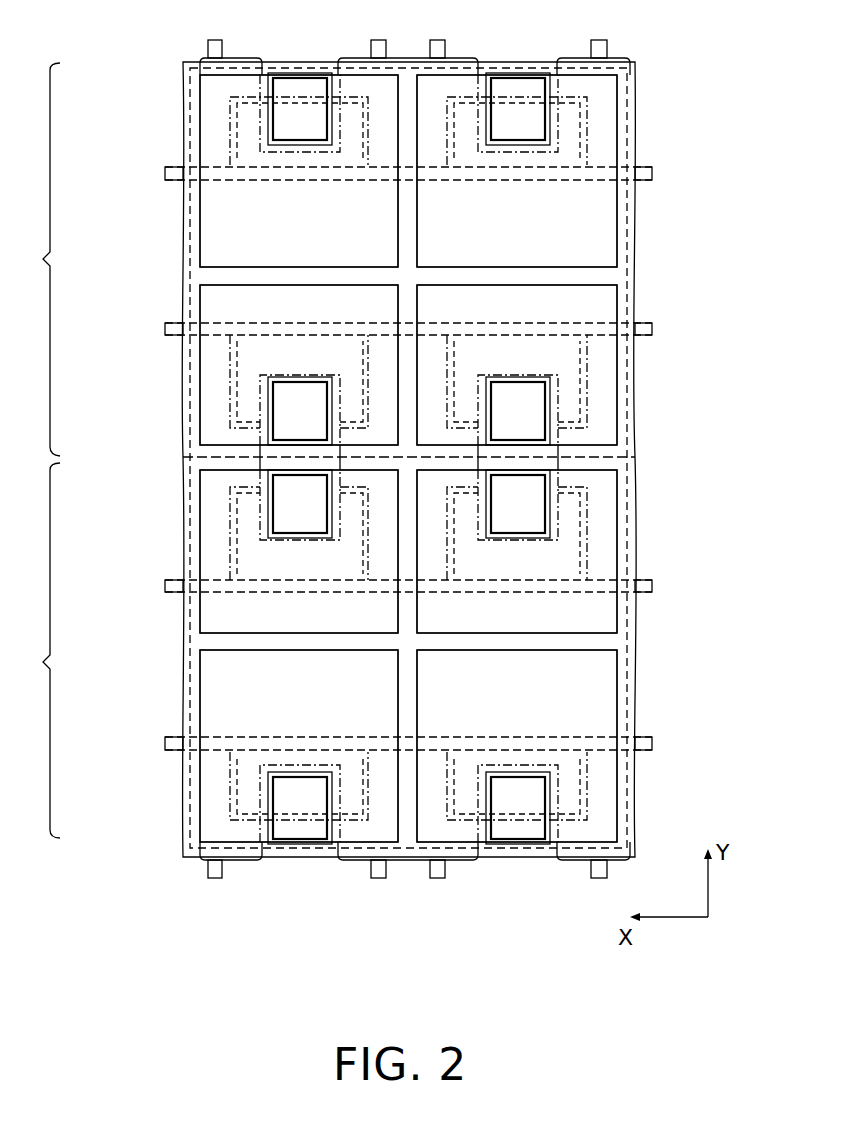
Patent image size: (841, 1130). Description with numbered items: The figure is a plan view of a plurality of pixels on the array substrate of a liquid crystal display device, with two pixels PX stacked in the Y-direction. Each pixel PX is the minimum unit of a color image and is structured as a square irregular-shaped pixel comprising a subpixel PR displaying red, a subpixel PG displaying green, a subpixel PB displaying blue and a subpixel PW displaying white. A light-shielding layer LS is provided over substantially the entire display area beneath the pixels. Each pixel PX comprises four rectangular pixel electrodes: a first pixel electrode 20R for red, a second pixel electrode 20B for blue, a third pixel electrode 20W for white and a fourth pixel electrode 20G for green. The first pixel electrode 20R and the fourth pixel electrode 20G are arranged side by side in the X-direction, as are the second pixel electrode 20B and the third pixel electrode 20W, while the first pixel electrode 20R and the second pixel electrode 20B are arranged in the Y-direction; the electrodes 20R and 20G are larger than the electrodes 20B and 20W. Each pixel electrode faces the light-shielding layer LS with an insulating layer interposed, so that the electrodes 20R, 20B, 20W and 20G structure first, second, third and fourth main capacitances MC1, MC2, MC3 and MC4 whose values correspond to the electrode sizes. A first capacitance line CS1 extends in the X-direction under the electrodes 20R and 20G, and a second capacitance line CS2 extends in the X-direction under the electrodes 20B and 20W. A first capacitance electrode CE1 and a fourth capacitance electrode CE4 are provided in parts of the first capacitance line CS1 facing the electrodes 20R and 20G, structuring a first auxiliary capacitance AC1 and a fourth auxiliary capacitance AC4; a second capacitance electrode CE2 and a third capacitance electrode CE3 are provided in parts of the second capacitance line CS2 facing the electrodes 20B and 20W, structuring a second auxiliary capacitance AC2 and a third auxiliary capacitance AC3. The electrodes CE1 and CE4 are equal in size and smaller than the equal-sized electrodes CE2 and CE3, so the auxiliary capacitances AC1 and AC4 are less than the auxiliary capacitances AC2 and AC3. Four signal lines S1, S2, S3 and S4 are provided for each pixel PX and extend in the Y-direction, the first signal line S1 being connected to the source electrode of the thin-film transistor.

The pixel PX is at (321, 450).
The first signal line S1 is at (215, 40).
The second signal line S2 is at (378, 40).
The third signal line S3 is at (437, 40).
The fourth signal line S4 is at (598, 40).
The first pixel electrode 20R is at (212, 218).
The fourth pixel electrode 20G is at (593, 203).
The second pixel electrode 20B is at (230, 380).
The third pixel electrode 20W is at (593, 398).
The subpixel displaying red PR is at (229, 240).
The subpixel displaying green PG is at (590, 243).
The subpixel displaying blue PB is at (227, 348).
The subpixel displaying white PW is at (597, 312).
The first capacitance line CS1 is at (170, 170).
The second capacitance line CS2 is at (170, 328).
The first capacitance electrode CE1 is at (232, 98).
The second capacitance electrode CE2 is at (226, 412).
The third capacitance electrode CE3 is at (570, 360).
The fourth capacitance electrode CE4 is at (570, 150).
The first auxiliary capacitance AC1 is at (229, 120).
The second auxiliary capacitance AC2 is at (199, 440).
The third auxiliary capacitance AC3 is at (593, 413).
The fourth auxiliary capacitance AC4 is at (597, 118).
The first main capacitance MC1 is at (199, 195).
The second main capacitance MC2 is at (190, 448).
The third main capacitance MC3 is at (622, 433).
The fourth main capacitance MC4 is at (618, 228).
The light-shielding layer LS is at (212, 277).